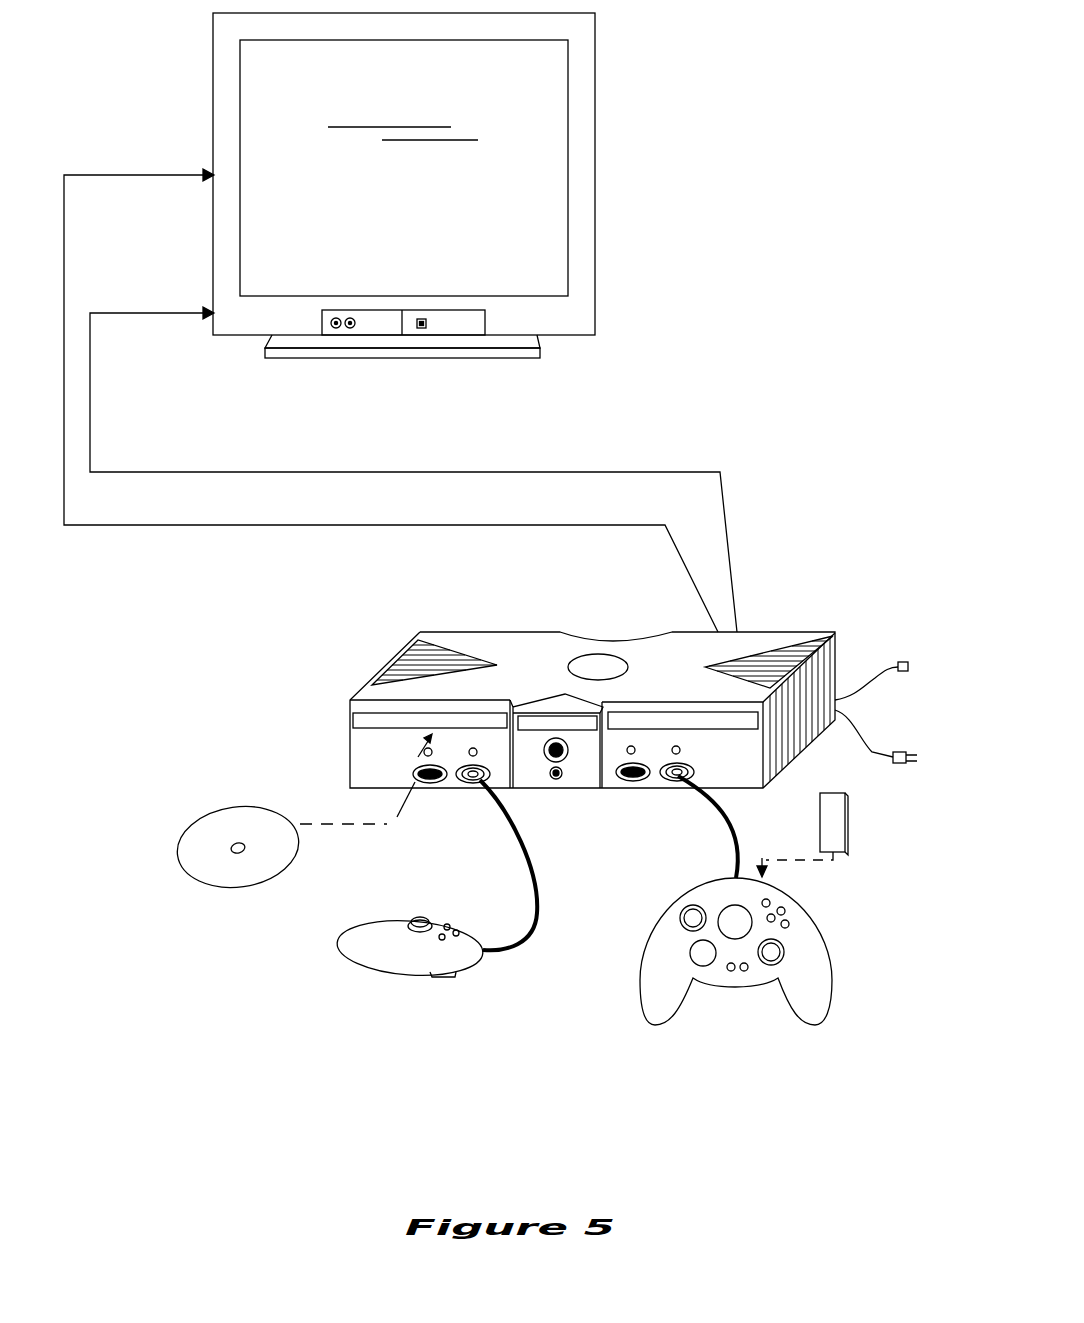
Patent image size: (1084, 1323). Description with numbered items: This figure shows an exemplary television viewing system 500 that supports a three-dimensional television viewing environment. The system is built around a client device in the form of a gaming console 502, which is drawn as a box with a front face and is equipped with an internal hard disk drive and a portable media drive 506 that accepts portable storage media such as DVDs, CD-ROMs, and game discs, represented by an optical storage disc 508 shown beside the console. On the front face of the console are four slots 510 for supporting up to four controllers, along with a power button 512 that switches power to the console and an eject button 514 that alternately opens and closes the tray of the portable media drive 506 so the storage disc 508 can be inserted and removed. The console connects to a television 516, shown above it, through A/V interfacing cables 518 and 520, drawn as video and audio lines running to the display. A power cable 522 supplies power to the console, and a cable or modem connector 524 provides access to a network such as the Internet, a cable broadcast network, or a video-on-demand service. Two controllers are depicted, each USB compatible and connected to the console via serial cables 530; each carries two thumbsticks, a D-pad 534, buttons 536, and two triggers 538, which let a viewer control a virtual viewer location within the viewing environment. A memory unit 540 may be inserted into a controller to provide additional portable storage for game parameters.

The television viewing system 500 is at (786, 368).
The gaming console 502 is at (457, 630).
The portable media drive 506 is at (365, 717).
The optical storage disc 508 is at (250, 883).
The slots 510 is at (473, 786).
The power button 512 is at (558, 786).
The eject button 514 is at (552, 738).
The television 516 is at (533, 281).
The A/V interfacing cable 518 is at (391, 382).
The A/V interfacing cable 520 is at (413, 452).
The power cable 522 is at (893, 764).
The cable or modem connector 524 is at (873, 688).
The serial cables 530 is at (540, 870).
The D-pad 534 is at (692, 952).
The buttons 536 is at (450, 928).
The triggers 538 is at (456, 975).
The memory unit 540 is at (848, 818).